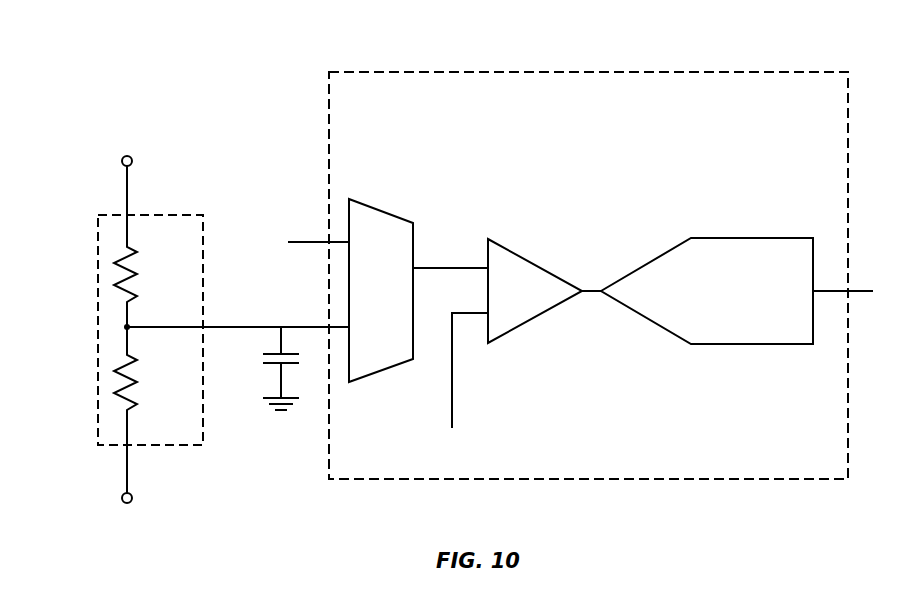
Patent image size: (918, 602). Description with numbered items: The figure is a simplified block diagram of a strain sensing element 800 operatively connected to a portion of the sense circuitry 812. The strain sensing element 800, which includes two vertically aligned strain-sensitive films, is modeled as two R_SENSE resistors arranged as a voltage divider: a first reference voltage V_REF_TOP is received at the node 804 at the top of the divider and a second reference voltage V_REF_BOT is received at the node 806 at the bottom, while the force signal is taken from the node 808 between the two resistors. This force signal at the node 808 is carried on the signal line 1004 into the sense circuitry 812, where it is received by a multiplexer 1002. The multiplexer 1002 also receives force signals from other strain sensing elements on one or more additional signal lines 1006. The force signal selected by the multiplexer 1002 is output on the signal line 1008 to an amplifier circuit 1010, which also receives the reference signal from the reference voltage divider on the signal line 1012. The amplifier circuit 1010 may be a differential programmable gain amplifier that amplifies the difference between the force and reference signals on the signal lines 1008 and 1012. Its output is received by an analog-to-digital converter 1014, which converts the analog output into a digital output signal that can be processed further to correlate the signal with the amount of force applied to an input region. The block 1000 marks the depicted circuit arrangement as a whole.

The strain sensing element 800 is at (163, 214).
The node 804 is at (128, 156).
The node 806 is at (127, 503).
The node 808 is at (132, 323).
The sense circuitry 812 is at (604, 71).
The measurement circuit 1000 is at (595, 178).
The multiplexer 1002 is at (387, 209).
The signal line 1004 is at (242, 325).
The additional signal lines 1006 is at (305, 241).
The signal line 1008 is at (451, 267).
The amplifier circuit 1010 is at (531, 261).
The signal line 1012 is at (451, 409).
The analog-to-digital converter 1014 is at (750, 237).